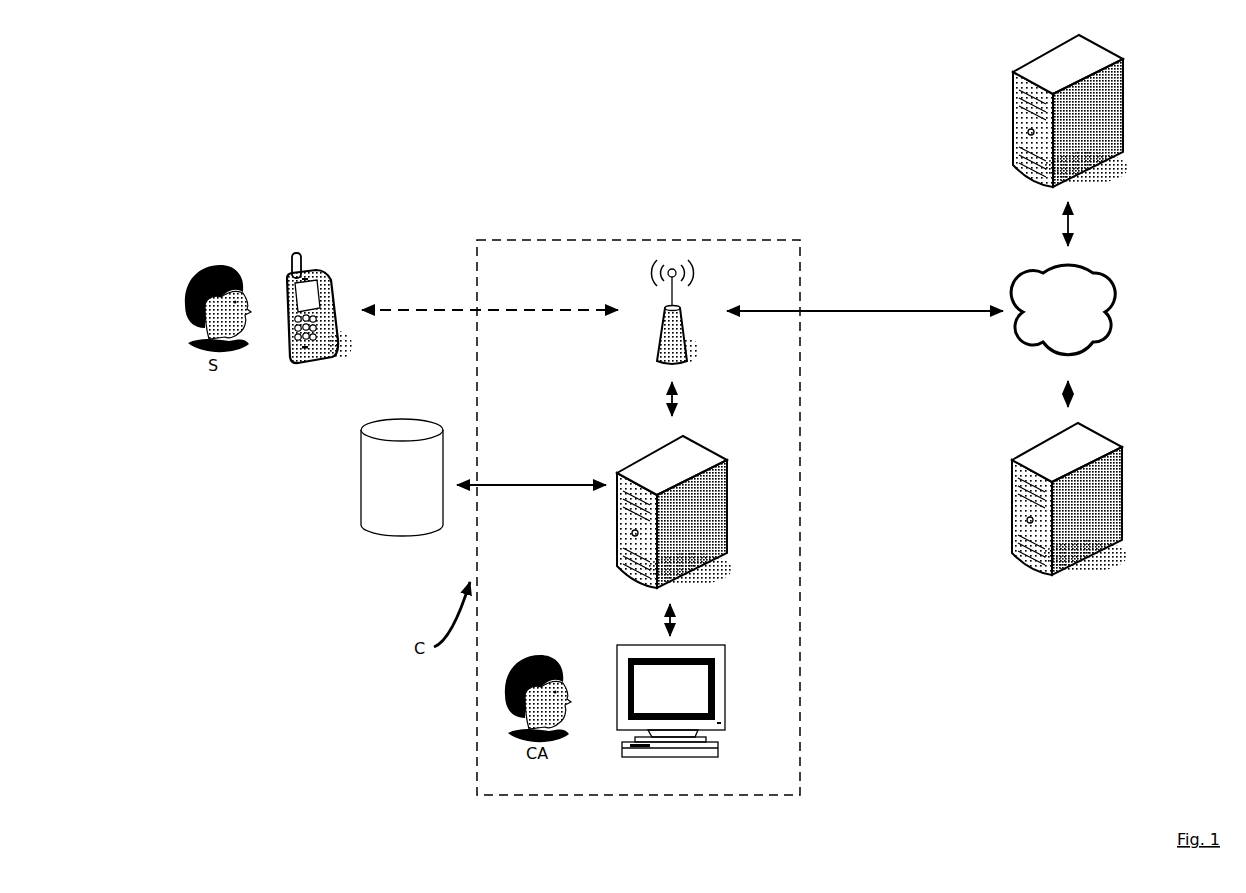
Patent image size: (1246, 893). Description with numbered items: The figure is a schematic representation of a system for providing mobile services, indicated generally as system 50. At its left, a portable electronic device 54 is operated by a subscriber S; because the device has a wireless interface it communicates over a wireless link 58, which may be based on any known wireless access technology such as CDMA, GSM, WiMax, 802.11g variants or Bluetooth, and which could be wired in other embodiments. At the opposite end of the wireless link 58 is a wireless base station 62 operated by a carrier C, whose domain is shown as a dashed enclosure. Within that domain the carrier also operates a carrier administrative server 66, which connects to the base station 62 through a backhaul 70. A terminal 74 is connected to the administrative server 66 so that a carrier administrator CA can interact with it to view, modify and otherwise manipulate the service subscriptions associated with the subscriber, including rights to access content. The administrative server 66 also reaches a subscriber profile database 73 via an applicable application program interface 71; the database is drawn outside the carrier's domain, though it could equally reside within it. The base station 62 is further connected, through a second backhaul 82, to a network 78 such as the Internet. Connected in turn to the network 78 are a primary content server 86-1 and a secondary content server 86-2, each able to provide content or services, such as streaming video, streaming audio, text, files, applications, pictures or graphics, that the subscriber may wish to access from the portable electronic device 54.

The system for providing mobile services 50 is at (314, 720).
The portable electronic device 54 is at (306, 384).
The wireless link 58 is at (561, 320).
The wireless base station 62 is at (660, 344).
The carrier administrative server 66 is at (602, 511).
The backhaul 70 is at (663, 400).
The application program interface 71 is at (554, 493).
The subscriber profile database 73 is at (356, 546).
The terminal 74 is at (671, 701).
The network 78 is at (1063, 310).
The backhaul 82 is at (886, 322).
The primary content server 86-1 is at (998, 508).
The secondary content server 86-2 is at (1011, 120).